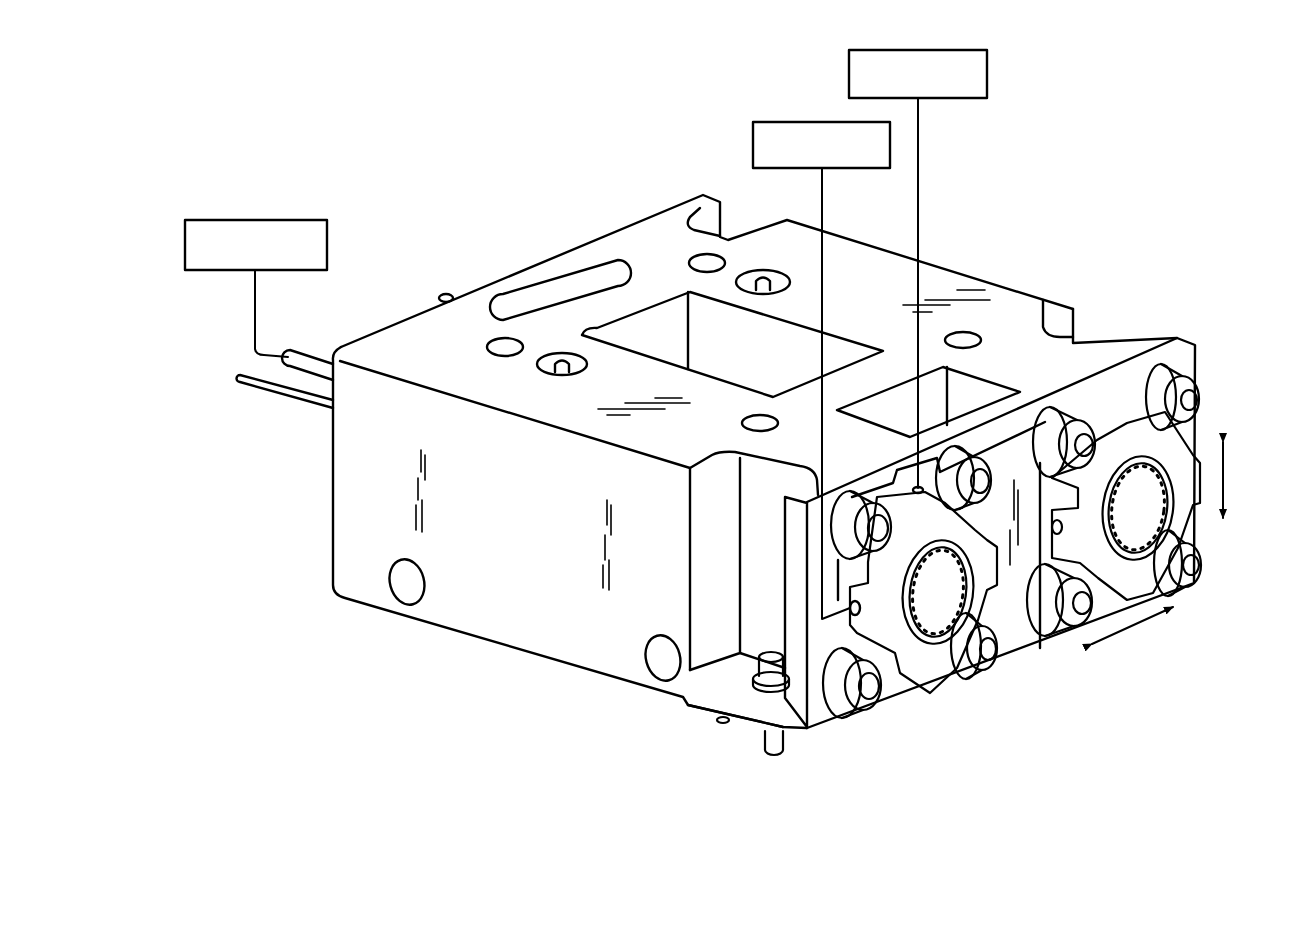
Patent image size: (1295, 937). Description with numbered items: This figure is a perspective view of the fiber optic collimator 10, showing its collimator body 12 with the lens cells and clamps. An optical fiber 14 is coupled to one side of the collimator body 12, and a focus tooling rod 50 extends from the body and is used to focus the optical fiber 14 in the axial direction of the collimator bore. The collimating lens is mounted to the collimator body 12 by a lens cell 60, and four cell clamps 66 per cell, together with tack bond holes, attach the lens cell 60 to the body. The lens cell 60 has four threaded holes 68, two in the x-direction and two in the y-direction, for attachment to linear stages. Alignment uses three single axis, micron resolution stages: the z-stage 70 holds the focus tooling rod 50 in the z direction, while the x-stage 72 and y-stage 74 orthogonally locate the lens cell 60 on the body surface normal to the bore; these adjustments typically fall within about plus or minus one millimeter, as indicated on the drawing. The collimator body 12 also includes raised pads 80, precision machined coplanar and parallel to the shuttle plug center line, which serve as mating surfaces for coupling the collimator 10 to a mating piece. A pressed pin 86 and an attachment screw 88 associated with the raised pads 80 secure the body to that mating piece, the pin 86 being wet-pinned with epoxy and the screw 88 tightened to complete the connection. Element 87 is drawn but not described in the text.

The fiber optic collimator 10 is at (1076, 220).
The collimator body 12 is at (963, 272).
The optical fiber 14 is at (302, 407).
The focus tooling rod 50 is at (312, 352).
The lens cell 60 is at (943, 675).
The cell clamps 66 is at (983, 660).
The threaded holes 68 is at (828, 690).
The z-stage 70 is at (292, 220).
The x-stage 72 is at (795, 120).
The y-stage 74 is at (957, 48).
The raised pads 80 is at (680, 704).
The pressed pin 86 is at (720, 722).
The flexure slot 87 is at (838, 575).
The attachment screw 88 is at (787, 752).